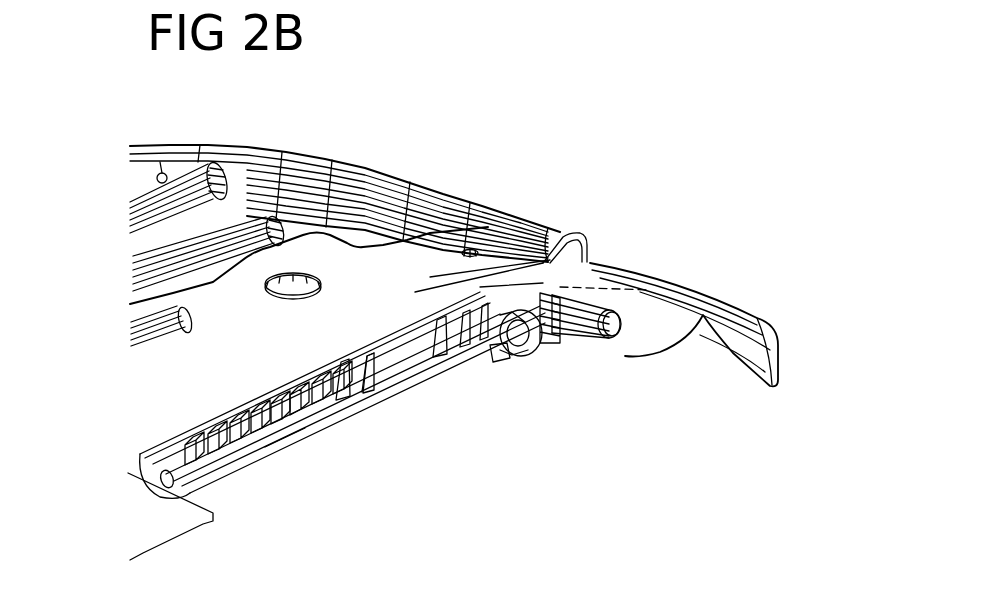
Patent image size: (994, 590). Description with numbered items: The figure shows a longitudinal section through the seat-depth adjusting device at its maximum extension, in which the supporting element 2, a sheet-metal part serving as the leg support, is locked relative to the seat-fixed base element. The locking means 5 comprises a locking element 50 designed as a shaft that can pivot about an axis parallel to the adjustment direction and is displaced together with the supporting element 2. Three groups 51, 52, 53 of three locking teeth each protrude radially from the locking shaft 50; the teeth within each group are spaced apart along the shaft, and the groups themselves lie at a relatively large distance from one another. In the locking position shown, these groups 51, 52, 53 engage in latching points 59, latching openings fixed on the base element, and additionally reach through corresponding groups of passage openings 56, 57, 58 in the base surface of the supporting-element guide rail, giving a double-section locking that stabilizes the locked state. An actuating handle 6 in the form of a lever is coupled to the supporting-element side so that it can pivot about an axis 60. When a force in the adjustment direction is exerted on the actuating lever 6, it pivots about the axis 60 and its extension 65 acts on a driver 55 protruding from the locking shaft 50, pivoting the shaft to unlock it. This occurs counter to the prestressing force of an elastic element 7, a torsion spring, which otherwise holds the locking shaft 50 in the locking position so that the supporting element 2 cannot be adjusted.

The supporting element 2 is at (480, 196).
The locking means 5 is at (363, 407).
The actuating handle 6 is at (757, 321).
The elastic element 7 is at (533, 277).
The locking element 50 is at (259, 470).
The group of locking teeth 51 is at (242, 407).
The group of locking teeth 52 is at (373, 365).
The group of locking teeth 53 is at (462, 306).
The driver 55 is at (537, 348).
The group of passage openings 56 is at (257, 412).
The group of passage openings 57 is at (370, 358).
The group of passage openings 58 is at (487, 307).
The latching points 59 is at (303, 447).
The pivot axis 60 is at (615, 323).
The extension 65 is at (512, 356).